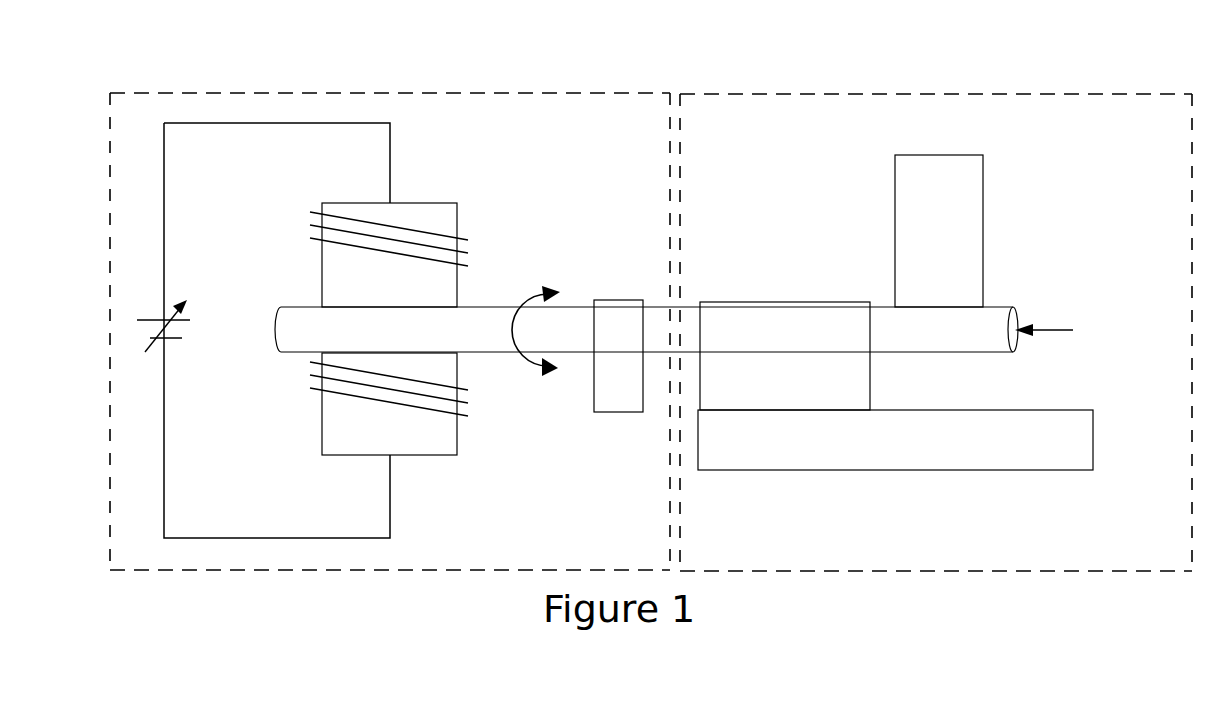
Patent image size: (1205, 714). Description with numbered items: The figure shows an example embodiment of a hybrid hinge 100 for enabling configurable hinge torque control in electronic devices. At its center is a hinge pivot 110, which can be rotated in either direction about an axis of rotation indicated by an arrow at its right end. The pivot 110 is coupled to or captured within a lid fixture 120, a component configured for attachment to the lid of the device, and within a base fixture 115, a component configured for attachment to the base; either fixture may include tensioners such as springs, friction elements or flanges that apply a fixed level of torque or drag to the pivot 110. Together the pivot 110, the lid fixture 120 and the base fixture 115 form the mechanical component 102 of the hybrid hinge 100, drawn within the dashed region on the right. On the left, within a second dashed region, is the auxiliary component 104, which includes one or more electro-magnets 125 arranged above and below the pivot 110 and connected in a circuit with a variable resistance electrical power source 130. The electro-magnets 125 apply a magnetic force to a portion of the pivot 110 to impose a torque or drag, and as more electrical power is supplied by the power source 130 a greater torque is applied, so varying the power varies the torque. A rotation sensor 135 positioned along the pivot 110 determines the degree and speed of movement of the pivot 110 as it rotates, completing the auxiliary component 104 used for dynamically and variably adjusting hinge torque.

The hybrid hinge 100 is at (651, 291).
The mechanical component 102 is at (936, 318).
The auxiliary component 104 is at (390, 317).
The hinge pivot 110 is at (646, 305).
The base fixture 115 is at (895, 386).
The lid fixture 120 is at (958, 214).
The electro-magnet 125 is at (403, 324).
The variable resistance electrical power source 130 is at (194, 339).
The rotation sensor 135 is at (588, 382).